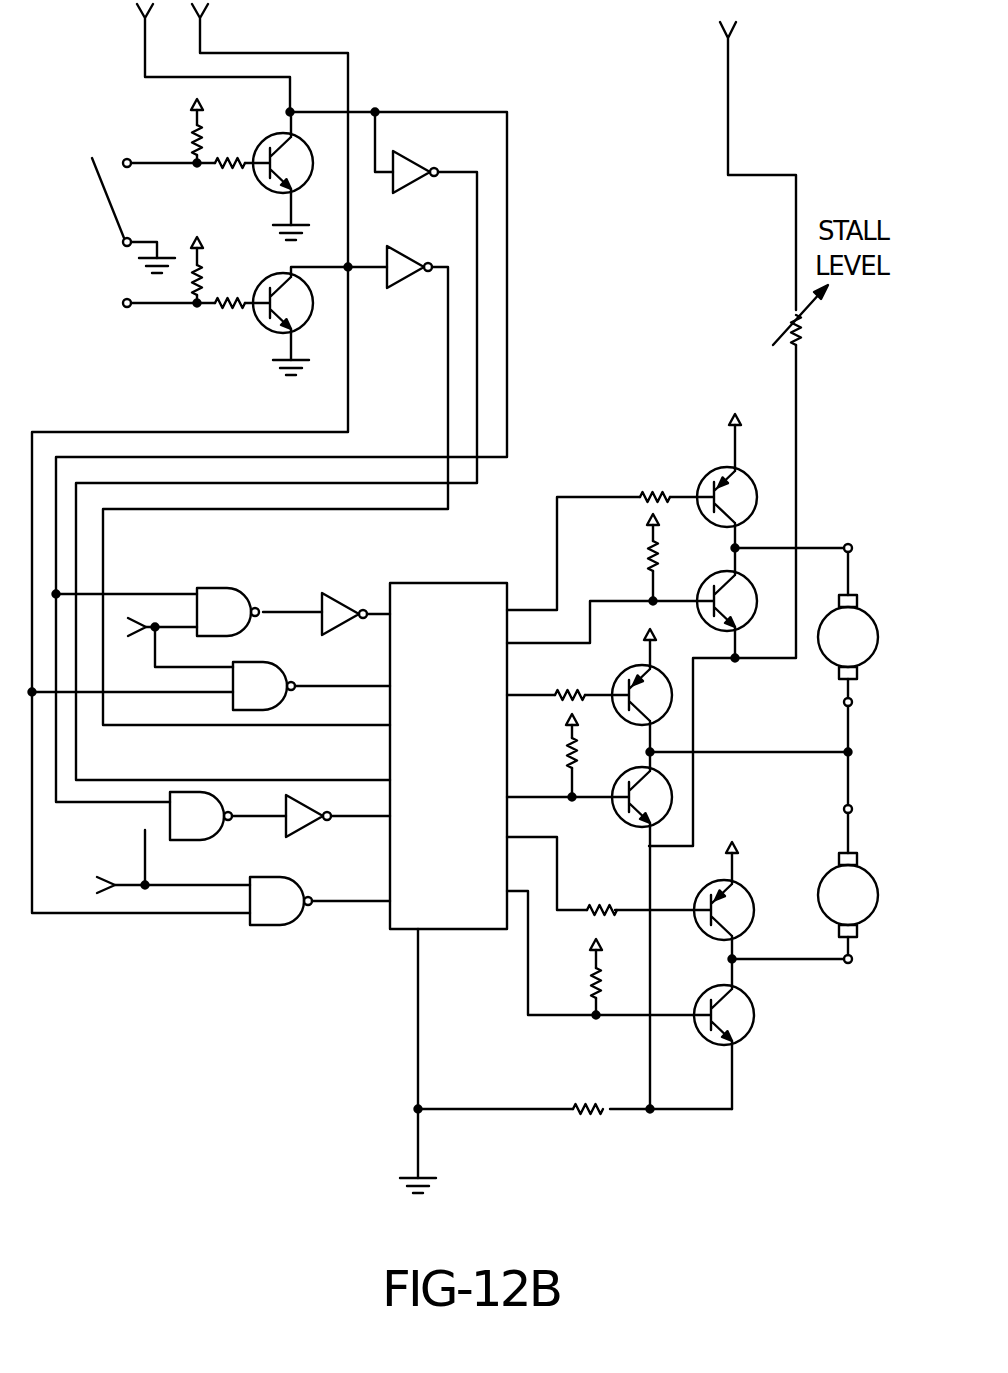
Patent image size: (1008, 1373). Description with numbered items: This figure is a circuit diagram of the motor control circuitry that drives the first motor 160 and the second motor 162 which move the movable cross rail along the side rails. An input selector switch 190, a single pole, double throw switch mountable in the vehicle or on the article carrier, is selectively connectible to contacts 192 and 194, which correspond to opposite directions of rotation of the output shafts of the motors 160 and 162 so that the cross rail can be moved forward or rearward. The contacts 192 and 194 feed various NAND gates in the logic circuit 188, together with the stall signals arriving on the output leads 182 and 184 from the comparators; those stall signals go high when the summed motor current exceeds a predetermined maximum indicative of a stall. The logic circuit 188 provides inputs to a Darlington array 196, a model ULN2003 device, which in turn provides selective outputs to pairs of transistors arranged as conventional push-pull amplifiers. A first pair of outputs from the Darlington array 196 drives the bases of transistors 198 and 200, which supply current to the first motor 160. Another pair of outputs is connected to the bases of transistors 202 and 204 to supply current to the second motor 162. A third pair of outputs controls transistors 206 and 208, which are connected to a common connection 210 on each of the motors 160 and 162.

The first motor 160 is at (866, 616).
The second motor 162 is at (860, 872).
The output lead 182 is at (148, 625).
The output lead 184 is at (123, 888).
The logic circuit 188 is at (285, 545).
The input selector switch 190 is at (95, 236).
The contact 192 is at (123, 161).
The contact 194 is at (125, 307).
The Darlington array 196 is at (422, 586).
The transistor 198 is at (752, 487).
The transistor 200 is at (752, 585).
The transistor 202 is at (748, 898).
The transistor 204 is at (752, 1015).
The transistor 206 is at (673, 696).
The transistor 208 is at (673, 797).
The common connection 210 is at (851, 752).